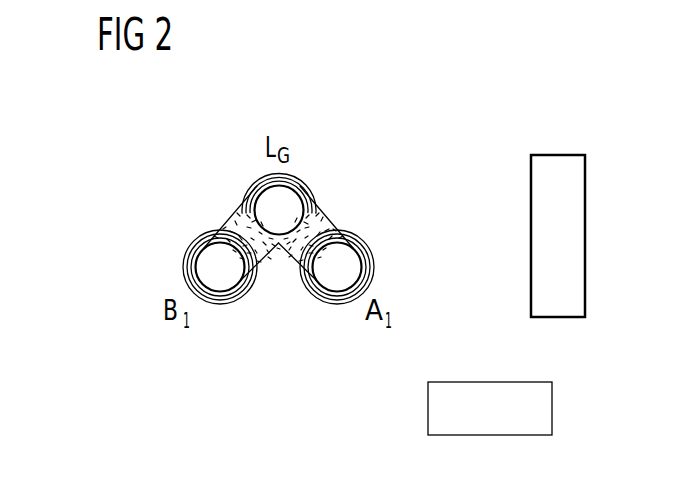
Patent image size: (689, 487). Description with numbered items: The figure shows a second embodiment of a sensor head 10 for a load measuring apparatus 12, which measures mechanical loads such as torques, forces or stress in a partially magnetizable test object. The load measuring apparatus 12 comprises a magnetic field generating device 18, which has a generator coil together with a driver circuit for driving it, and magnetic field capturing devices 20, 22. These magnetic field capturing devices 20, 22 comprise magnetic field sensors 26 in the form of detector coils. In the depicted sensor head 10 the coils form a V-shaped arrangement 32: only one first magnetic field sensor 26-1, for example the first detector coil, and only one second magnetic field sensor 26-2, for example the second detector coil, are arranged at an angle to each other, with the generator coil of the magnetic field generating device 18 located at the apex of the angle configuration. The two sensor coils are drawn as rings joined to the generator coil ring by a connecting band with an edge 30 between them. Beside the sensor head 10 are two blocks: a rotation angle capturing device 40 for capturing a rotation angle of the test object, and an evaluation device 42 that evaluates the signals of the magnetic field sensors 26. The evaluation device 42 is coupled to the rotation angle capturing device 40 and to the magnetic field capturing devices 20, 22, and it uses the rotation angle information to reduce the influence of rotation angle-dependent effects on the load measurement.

The sensor head 10 is at (203, 155).
The load measuring apparatus 12 is at (398, 195).
The magnetic field generating device 18 is at (302, 183).
The magnetic field capturing device 20 is at (310, 317).
The magnetic field capturing device 22 is at (383, 277).
The magnetic field sensor 26 is at (242, 318).
The first magnetic field sensor 26-1 is at (385, 260).
The second magnetic field sensor 26-2 is at (182, 228).
The band edge 30 is at (327, 217).
The V-shaped arrangement 32 is at (332, 112).
The rotation angle capturing device 40 is at (558, 236).
The evaluation device 42 is at (490, 408).